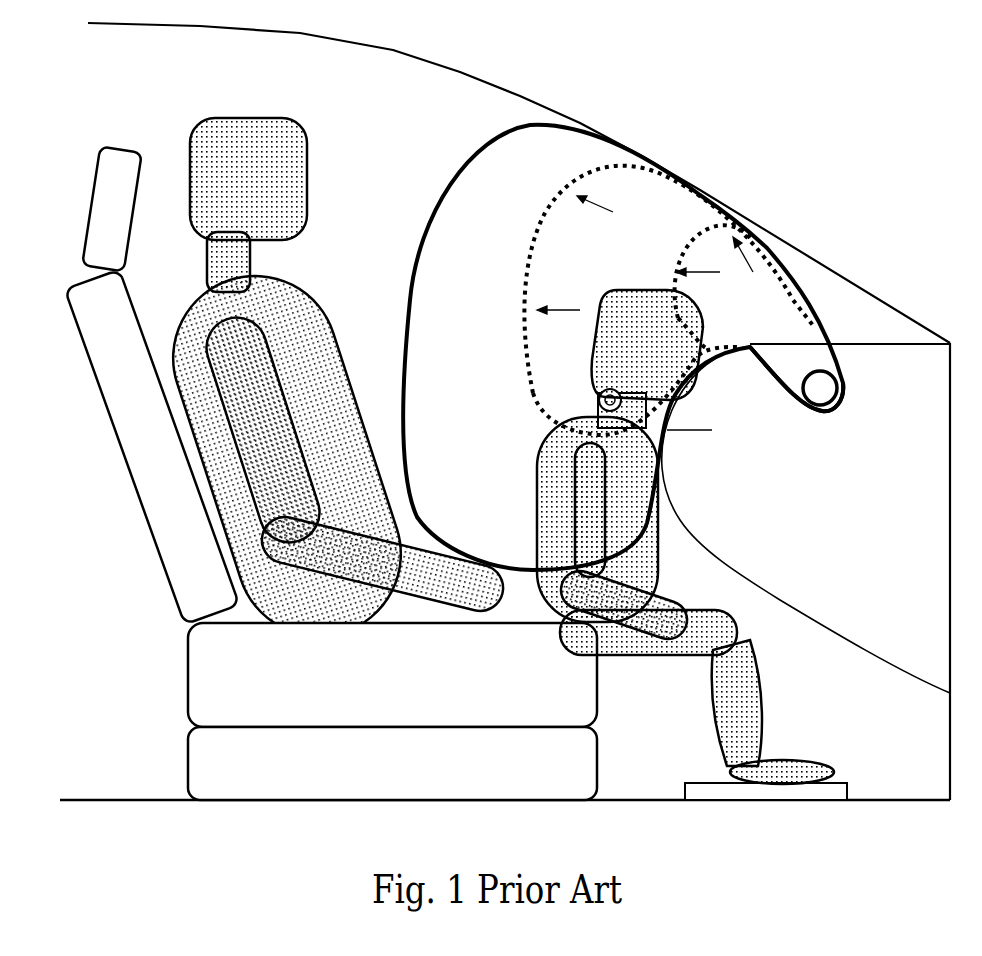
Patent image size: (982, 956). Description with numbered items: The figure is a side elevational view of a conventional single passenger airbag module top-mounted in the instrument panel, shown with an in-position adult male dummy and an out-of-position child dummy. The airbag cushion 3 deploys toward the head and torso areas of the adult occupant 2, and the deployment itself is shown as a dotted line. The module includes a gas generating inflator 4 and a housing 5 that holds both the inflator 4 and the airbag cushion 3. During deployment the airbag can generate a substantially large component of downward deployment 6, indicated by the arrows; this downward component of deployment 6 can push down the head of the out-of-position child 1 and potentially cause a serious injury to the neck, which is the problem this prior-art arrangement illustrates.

The out-of-position child 1 is at (630, 312).
The adult occupant 2 is at (278, 132).
The airbag cushion 3 is at (455, 163).
The gas generating inflator 4 is at (820, 397).
The housing 5 is at (840, 368).
The component of downward deployment 6 is at (703, 285).